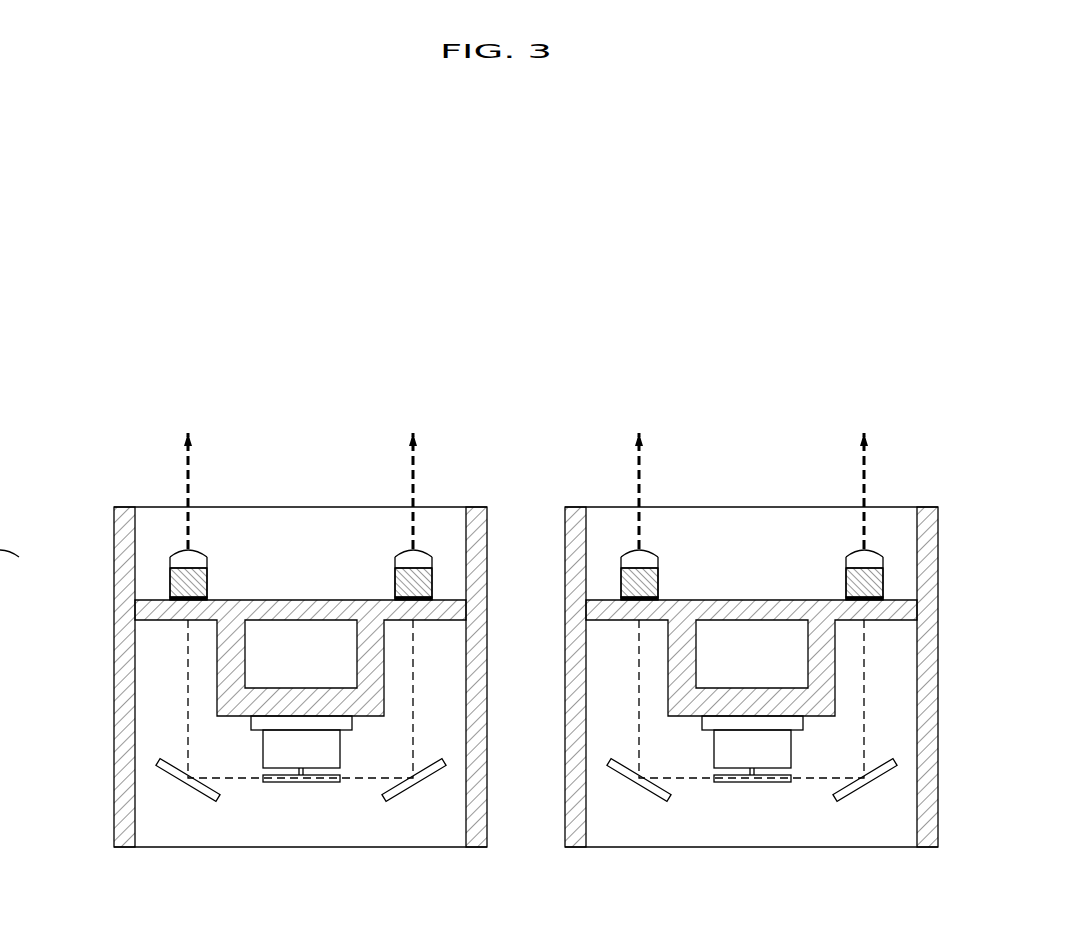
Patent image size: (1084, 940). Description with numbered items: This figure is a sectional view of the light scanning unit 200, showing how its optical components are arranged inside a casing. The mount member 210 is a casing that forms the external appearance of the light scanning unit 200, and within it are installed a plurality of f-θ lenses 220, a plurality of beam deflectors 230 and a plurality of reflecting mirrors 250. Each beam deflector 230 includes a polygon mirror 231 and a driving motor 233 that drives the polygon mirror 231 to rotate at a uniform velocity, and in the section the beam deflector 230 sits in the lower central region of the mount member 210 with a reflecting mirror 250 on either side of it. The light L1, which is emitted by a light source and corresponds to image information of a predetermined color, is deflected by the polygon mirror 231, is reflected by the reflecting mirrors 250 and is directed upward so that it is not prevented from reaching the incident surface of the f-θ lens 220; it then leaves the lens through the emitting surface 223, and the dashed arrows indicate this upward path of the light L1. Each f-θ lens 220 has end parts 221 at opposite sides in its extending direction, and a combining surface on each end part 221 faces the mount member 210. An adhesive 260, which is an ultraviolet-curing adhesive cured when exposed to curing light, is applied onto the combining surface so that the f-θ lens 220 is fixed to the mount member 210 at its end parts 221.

The light scanning unit 200 is at (793, 365).
The mount member 210 is at (127, 682).
The f-θ lens 220 is at (206, 546).
The end parts 221 is at (200, 578).
The emitting surface 223 is at (178, 548).
The beam deflector 230 is at (323, 794).
The polygon mirror 231 is at (287, 786).
The driving motor 233 is at (270, 747).
The reflecting mirror 250 is at (183, 790).
The adhesive 260 is at (212, 598).
The light L1 is at (190, 454).